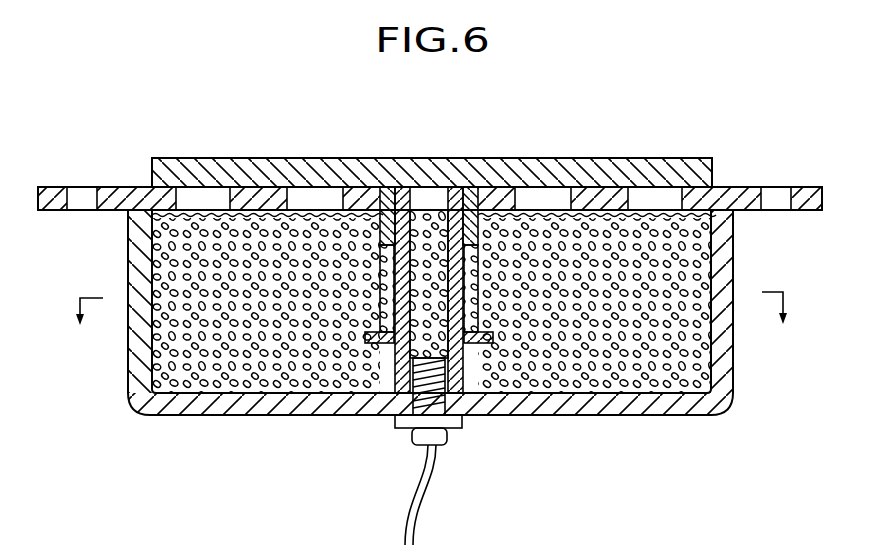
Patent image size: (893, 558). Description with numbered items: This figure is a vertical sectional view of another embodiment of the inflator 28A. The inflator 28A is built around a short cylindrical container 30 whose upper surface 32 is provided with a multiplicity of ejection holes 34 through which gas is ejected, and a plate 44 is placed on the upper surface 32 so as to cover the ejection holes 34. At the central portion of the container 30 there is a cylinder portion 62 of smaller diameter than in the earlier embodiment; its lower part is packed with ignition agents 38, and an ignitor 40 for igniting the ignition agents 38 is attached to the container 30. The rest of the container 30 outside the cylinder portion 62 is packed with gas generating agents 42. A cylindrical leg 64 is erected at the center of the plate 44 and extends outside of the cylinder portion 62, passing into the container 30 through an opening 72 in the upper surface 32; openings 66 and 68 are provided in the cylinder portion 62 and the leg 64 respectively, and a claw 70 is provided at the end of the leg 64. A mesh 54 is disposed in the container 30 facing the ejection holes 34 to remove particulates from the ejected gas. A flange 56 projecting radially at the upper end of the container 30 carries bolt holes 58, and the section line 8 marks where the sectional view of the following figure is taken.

The inflator 28A is at (652, 418).
The container 30 is at (733, 390).
The upper surface 32 is at (263, 200).
The ejection holes 34 is at (212, 198).
The ignition agents 38 is at (468, 350).
The ignitor 40 is at (438, 450).
The gas generating agents 42 is at (603, 393).
The plate 44 is at (306, 158).
The mesh 54 is at (200, 226).
The flange 56 is at (50, 212).
The bolt holes 58 is at (82, 197).
The cylinder portion 62 is at (395, 370).
The cylindrical leg 64 is at (370, 222).
The openings 66 is at (383, 294).
The openings 68 is at (378, 298).
The claw 70 is at (364, 342).
The opening 72 is at (482, 207).
The section line 8- 8 is at (433, 325).